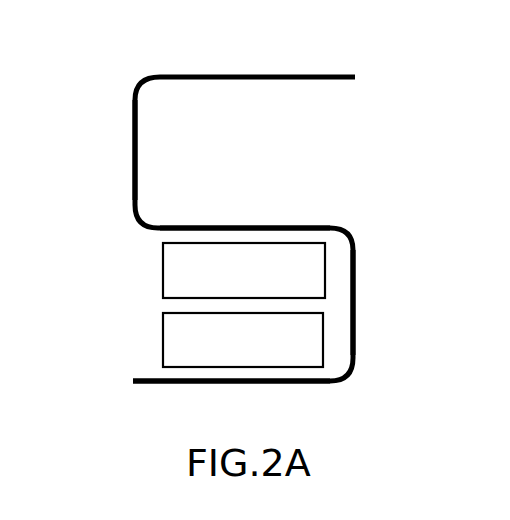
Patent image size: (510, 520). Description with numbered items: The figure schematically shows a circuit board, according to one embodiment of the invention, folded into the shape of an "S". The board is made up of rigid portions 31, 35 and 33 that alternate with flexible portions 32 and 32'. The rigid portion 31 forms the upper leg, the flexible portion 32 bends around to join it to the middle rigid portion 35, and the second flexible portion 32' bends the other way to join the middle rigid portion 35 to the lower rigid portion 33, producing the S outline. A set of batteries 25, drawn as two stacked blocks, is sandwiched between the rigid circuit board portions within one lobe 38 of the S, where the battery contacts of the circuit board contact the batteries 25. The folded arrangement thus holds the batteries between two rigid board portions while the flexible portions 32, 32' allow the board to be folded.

The rigid portion 31 is at (247, 75).
The flexible portion 32 is at (95, 150).
The rigid portion 35 is at (217, 227).
The lobe 38 is at (335, 273).
The flexible portion 32' is at (390, 317).
The set of batteries 25 is at (163, 273).
The rigid portion 33 is at (240, 385).